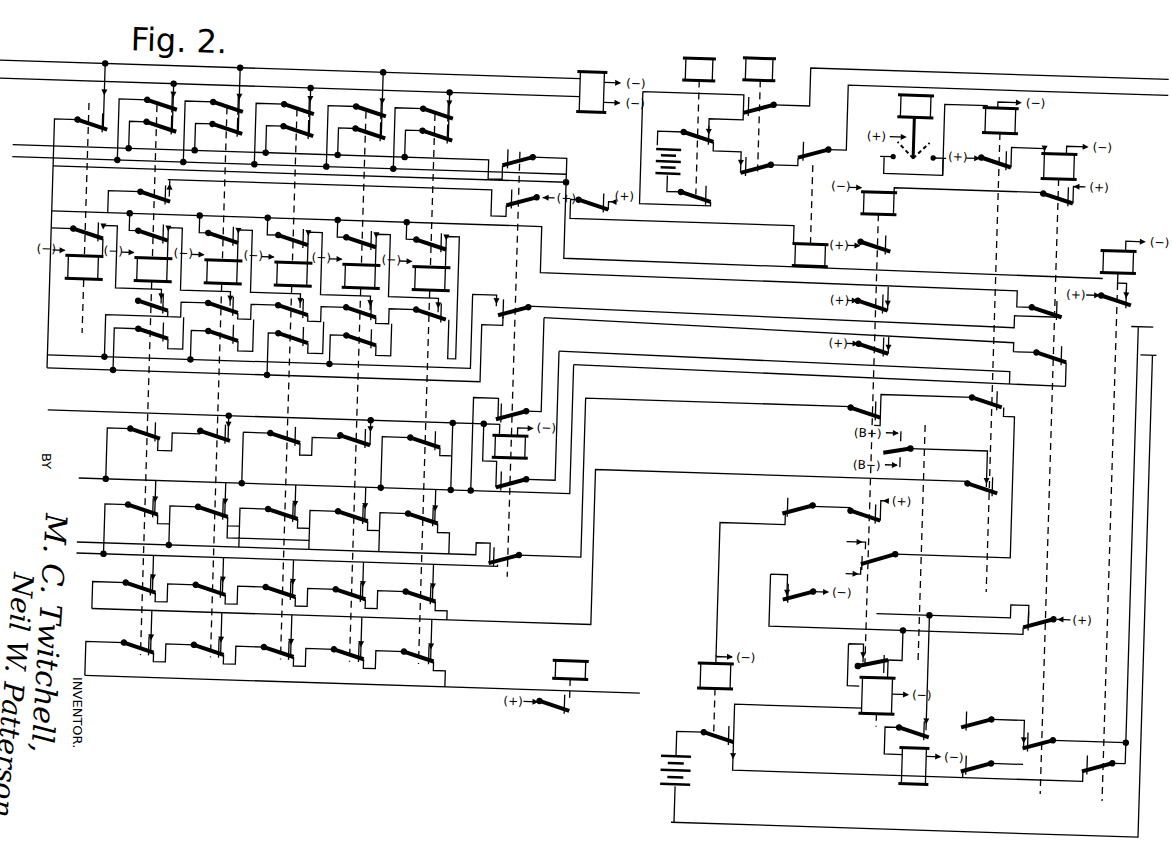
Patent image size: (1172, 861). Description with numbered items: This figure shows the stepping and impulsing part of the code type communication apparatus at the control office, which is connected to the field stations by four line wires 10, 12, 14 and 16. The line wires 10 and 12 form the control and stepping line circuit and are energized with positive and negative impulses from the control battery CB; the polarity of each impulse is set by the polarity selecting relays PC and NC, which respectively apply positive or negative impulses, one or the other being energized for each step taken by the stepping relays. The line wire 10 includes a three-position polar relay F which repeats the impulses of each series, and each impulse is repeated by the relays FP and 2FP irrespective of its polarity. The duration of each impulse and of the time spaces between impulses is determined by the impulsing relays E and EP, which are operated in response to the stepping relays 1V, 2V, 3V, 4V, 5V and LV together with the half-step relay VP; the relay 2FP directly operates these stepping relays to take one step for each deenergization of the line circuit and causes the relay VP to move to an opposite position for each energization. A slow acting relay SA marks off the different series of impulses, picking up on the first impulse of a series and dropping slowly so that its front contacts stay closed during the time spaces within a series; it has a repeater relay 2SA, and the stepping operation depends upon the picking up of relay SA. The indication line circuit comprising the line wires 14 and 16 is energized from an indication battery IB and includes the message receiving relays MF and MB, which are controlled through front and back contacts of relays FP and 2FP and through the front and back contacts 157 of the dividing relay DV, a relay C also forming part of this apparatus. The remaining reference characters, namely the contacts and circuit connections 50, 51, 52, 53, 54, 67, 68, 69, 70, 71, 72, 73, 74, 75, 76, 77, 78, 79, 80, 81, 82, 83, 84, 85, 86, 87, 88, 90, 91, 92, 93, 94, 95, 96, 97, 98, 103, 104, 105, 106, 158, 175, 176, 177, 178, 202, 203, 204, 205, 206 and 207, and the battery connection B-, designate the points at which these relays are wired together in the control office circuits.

The bus wire 94 is at (531, 58).
The bus wire 98 is at (531, 78).
The contact 106 is at (81, 127).
The contact 105 is at (288, 100).
The contact 104 is at (360, 100).
The contact 97 is at (426, 100).
The contact 103 is at (252, 134).
The contact 96 is at (361, 137).
The contact 93 is at (427, 139).
The contact 92 is at (524, 166).
The contact 88 is at (524, 205).
The contact 95 is at (601, 209).
The wire 91 is at (62, 217).
The contact 87 is at (287, 232).
The contact 83 is at (357, 234).
The contact 79 is at (426, 236).
The contact 86 is at (347, 312).
The contact 82 is at (418, 317).
The contact 81 is at (295, 335).
The contact 78 is at (370, 340).
The contact 77 is at (514, 316).
The contact 74 is at (512, 407).
The contact 80 is at (512, 476).
The contact 84 is at (269, 442).
The contact 85 is at (340, 444).
The contact 73 is at (408, 447).
The impulsing relay E is at (592, 82).
The polarity selecting relay NC is at (699, 58).
The polarity selecting relay PC is at (759, 58).
The control battery CB is at (678, 161).
The contact 50 is at (689, 127).
The contact 53 is at (766, 113).
The contact 54 is at (706, 195).
The contact 51 is at (757, 175).
The contact 52 is at (815, 146).
The three-position polar relay F is at (902, 80).
The polar contact 67 is at (914, 145).
The repeater relay FP is at (1009, 121).
The contact 68 is at (987, 168).
The repeater relay 2FP is at (1074, 166).
The contact 69 is at (1050, 202).
The slow acting relay SA is at (889, 204).
The impulsing relay EP is at (801, 228).
The contact 70 is at (867, 253).
The repeater relay 2SA is at (1109, 229).
The line wire 12 is at (1084, 48).
The line wire 10 is at (998, 123).
The line wire 14 is at (1139, 535).
The line wire 16 is at (916, 578).
The contact 75 is at (883, 299).
The contact 76 is at (1036, 315).
The contact 90 is at (1108, 305).
The contact 71 is at (883, 347).
The contact 72 is at (1044, 349).
The contact 205 is at (971, 495).
The contact 178 is at (801, 514).
The contact 177 is at (870, 521).
The contact 203 is at (800, 602).
The contact 202 is at (1045, 629).
The contact 207 is at (874, 654).
The message receiving relay MF is at (884, 688).
The contact 204 is at (927, 725).
The message receiving relay MB is at (926, 760).
The contact 175 is at (982, 730).
The contact 176 is at (1043, 750).
The contact 206 is at (983, 770).
The contact 158 is at (1100, 776).
The contacts of dividing relay 157 is at (706, 726).
The indication battery IB is at (682, 750).
The dividing relay DV is at (728, 676).
The relay C is at (576, 670).
The stepping relay LV is at (75, 266).
The stepping relay 5V is at (144, 266).
The stepping relay 4V is at (214, 266).
The stepping relay 3V is at (284, 266).
The stepping relay 2V is at (352, 266).
The stepping relay 1V is at (422, 266).
The half-step relay VP is at (520, 445).
The battery negative terminal B- is at (831, 573).